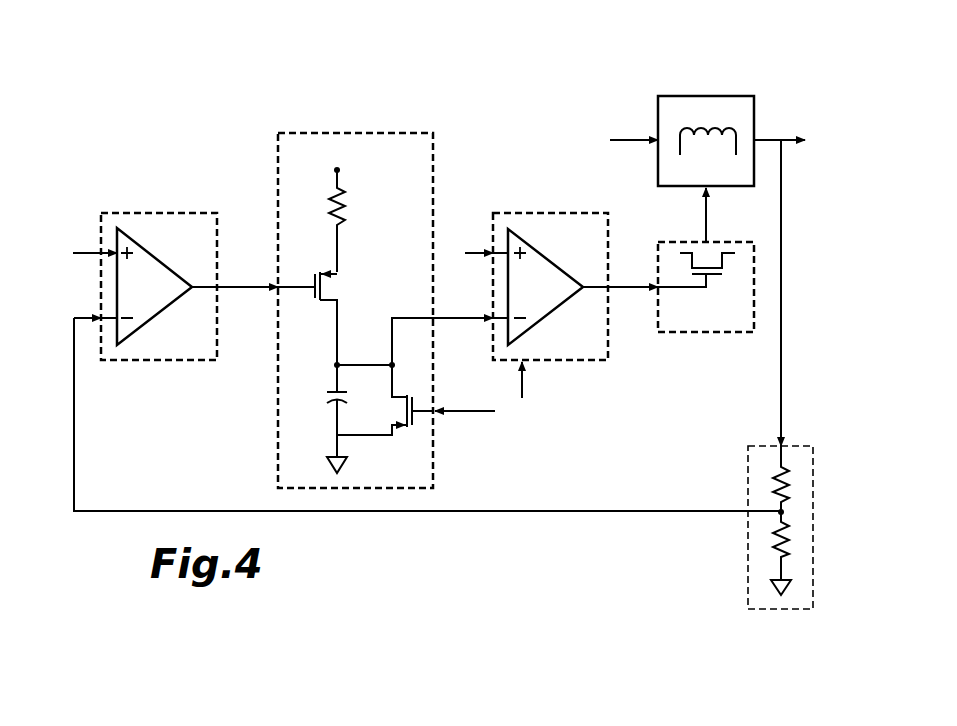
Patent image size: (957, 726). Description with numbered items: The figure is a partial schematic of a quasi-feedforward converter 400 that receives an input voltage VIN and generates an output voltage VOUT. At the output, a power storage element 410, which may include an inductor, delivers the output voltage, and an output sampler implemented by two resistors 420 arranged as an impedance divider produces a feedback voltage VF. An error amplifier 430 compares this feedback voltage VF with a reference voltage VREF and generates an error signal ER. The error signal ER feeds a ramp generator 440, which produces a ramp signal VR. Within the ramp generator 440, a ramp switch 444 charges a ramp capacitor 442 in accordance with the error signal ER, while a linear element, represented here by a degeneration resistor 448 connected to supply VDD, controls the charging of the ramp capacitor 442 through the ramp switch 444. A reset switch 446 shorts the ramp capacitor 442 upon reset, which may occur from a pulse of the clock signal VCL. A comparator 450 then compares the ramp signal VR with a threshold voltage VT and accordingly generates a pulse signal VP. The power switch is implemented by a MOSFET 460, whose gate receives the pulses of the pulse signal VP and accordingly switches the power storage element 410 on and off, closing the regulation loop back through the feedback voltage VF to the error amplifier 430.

The quasi-feedforward converter 400 is at (199, 76).
The power storage element 410 is at (708, 96).
The resistors 420 is at (785, 485).
The error amplifier 430 is at (153, 313).
The ramp generator 440 is at (395, 133).
The ramp capacitor 442 is at (330, 398).
The ramp switch 444 is at (330, 292).
The reset switch 446 is at (398, 411).
The resistor 448 is at (345, 213).
The comparator 450 is at (545, 315).
The MOSFET 460 is at (718, 278).